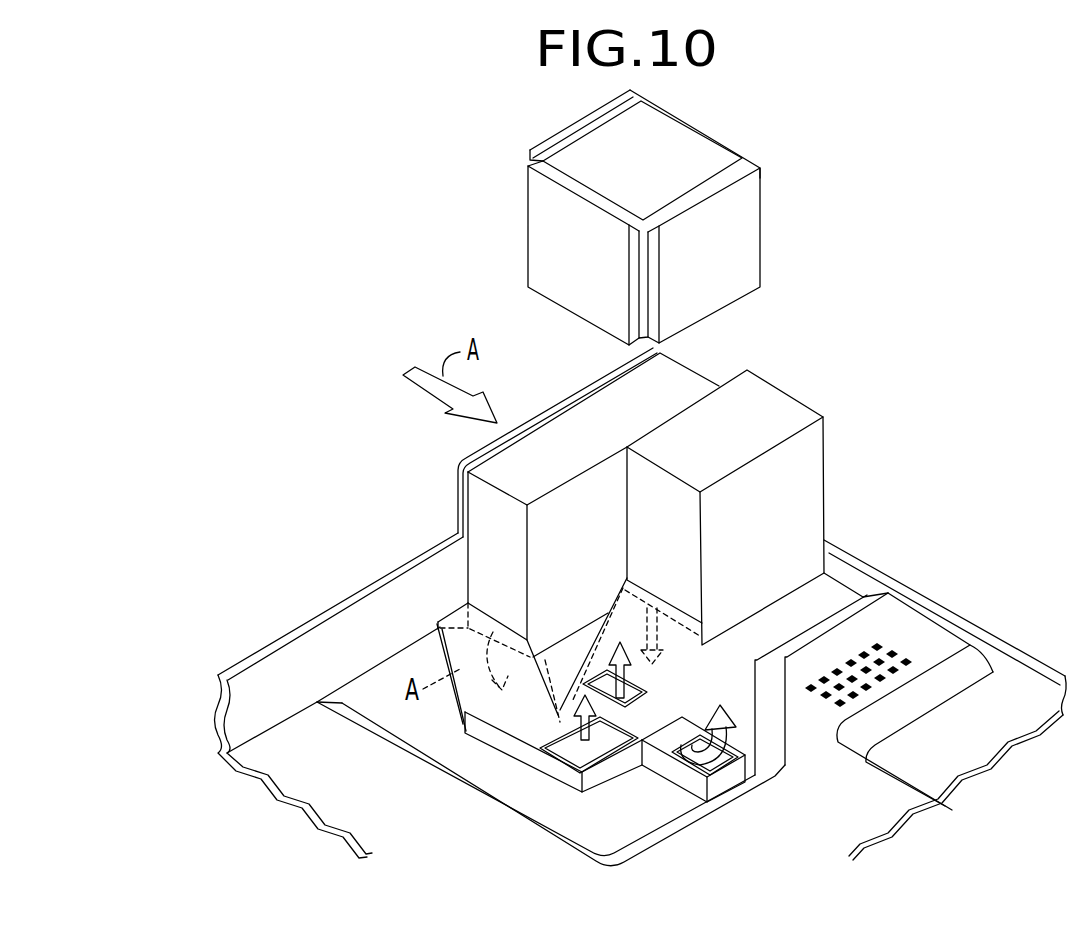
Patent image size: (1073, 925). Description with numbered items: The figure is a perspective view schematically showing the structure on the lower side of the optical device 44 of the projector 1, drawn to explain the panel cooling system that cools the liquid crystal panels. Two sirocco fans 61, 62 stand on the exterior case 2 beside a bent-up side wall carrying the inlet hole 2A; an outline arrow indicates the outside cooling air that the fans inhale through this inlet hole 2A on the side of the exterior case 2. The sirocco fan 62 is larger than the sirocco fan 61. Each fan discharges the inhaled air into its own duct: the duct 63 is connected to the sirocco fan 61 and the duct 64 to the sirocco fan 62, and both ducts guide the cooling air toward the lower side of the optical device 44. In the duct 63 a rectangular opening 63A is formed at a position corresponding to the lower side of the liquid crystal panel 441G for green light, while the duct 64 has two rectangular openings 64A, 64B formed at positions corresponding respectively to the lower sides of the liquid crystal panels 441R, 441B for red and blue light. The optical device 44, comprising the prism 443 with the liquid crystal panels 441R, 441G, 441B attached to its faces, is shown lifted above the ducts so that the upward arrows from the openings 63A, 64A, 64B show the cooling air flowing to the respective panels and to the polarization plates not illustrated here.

The projector 1 is at (1008, 340).
The exterior case 2 is at (1033, 680).
The inlet hole 2A is at (455, 492).
The optical device 44 is at (716, 134).
The liquid crystal panel for red color light 441R is at (570, 131).
The liquid crystal panel for green color light 441G is at (542, 245).
The liquid crystal panel for blue color light 441B is at (748, 228).
The cross dichroic prism 443 is at (724, 158).
The sirocco fan 61 is at (680, 378).
The sirocco fan 62 is at (780, 405).
The duct 63 is at (503, 745).
The rectangular opening 63A is at (563, 768).
The duct 64 is at (675, 773).
The rectangular opening 64A is at (646, 688).
The rectangular opening 64B is at (733, 760).